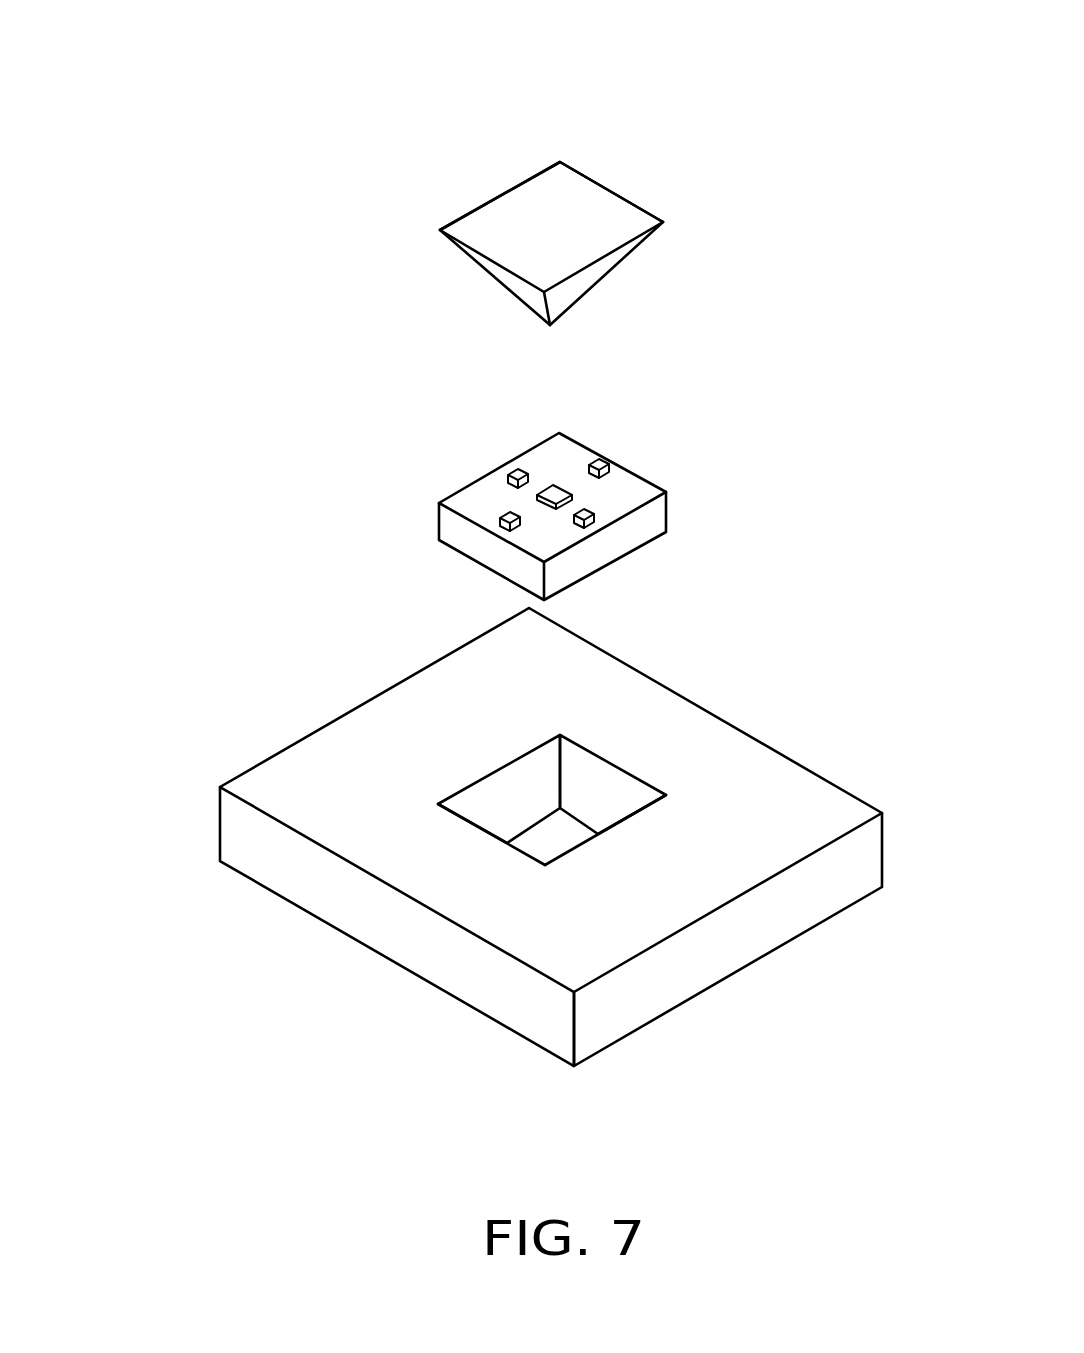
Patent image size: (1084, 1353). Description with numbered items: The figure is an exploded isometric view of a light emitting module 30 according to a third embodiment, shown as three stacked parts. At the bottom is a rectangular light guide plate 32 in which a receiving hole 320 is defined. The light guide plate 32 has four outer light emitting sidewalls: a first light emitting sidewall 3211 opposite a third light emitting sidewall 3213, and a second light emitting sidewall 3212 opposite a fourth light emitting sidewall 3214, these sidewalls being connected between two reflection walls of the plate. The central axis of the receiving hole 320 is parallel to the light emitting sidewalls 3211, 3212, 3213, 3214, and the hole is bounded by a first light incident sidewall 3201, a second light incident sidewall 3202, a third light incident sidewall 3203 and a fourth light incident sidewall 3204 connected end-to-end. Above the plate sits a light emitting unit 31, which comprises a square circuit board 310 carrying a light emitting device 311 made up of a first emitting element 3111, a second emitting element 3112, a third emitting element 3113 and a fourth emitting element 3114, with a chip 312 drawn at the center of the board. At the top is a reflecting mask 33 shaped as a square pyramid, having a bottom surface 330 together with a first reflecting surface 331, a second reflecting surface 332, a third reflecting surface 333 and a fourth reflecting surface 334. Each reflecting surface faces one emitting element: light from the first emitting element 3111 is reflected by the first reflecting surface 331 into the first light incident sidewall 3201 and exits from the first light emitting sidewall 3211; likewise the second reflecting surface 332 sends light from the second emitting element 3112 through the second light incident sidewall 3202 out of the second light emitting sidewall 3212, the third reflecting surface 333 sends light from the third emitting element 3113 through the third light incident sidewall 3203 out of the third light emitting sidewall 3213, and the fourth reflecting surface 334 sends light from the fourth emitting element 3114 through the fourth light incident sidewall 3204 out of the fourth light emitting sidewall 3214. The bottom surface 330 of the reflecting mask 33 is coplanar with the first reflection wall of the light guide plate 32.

The light emitting module 30 is at (551, 41).
The reflecting mask 33 is at (432, 235).
The bottom surface 330 is at (547, 210).
The first reflecting surface 331 is at (615, 185).
The second reflecting surface 332 is at (505, 188).
The third reflecting surface 333 is at (522, 292).
The fourth reflecting surface 334 is at (590, 278).
The light emitting unit 31 is at (420, 485).
The circuit board 310 is at (625, 537).
The light emitting device 311 is at (683, 394).
The first emitting element 3111 is at (598, 465).
The second emitting element 3112 is at (518, 473).
The third emitting element 3113 is at (507, 517).
The fourth emitting element 3114 is at (587, 513).
The light emitting chip 312 is at (552, 495).
The light guide plate 32 is at (197, 782).
The receiving hole 320 is at (563, 833).
The first light incident sidewall 3201 is at (580, 773).
The second light incident sidewall 3202 is at (528, 792).
The third light incident sidewall 3203 is at (488, 833).
The fourth light incident sidewall 3204 is at (580, 845).
The first light emitting sidewall 3211 is at (690, 698).
The second light emitting sidewall 3212 is at (373, 699).
The third light emitting sidewall 3213 is at (407, 938).
The fourth light emitting sidewall 3214 is at (725, 943).